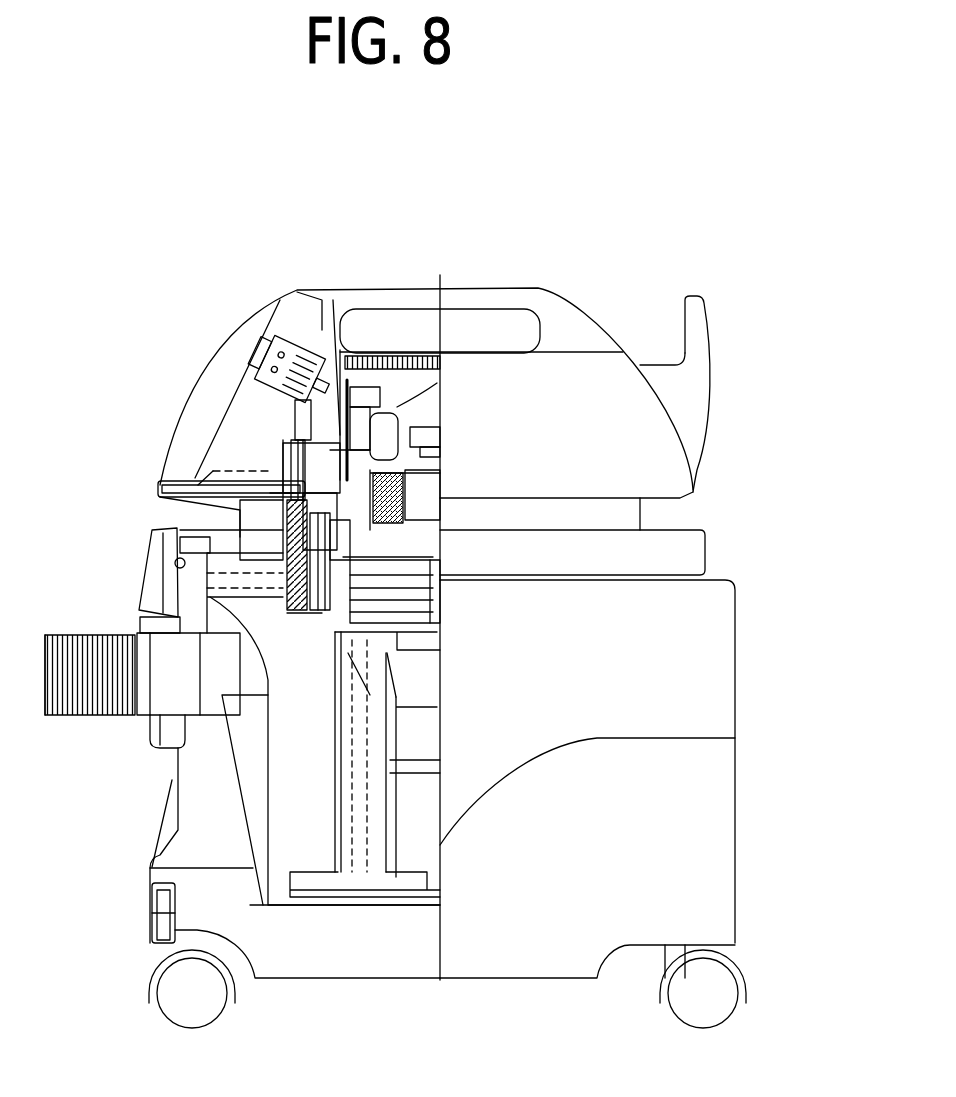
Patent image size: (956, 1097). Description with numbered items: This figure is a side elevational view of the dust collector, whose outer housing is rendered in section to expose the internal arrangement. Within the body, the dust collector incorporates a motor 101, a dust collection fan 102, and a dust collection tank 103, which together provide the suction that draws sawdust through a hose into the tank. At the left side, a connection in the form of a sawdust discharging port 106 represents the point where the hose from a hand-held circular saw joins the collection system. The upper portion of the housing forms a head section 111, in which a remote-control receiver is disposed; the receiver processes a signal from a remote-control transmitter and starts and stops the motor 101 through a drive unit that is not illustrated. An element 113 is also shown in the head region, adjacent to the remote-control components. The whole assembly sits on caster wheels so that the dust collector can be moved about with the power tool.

The motor 101 is at (400, 492).
The dust collection fan 102 is at (440, 637).
The dust collection tank 103 is at (172, 787).
The sawdust discharging port 106 is at (88, 634).
The head section 111 is at (492, 288).
The sensor unit 113 is at (272, 343).